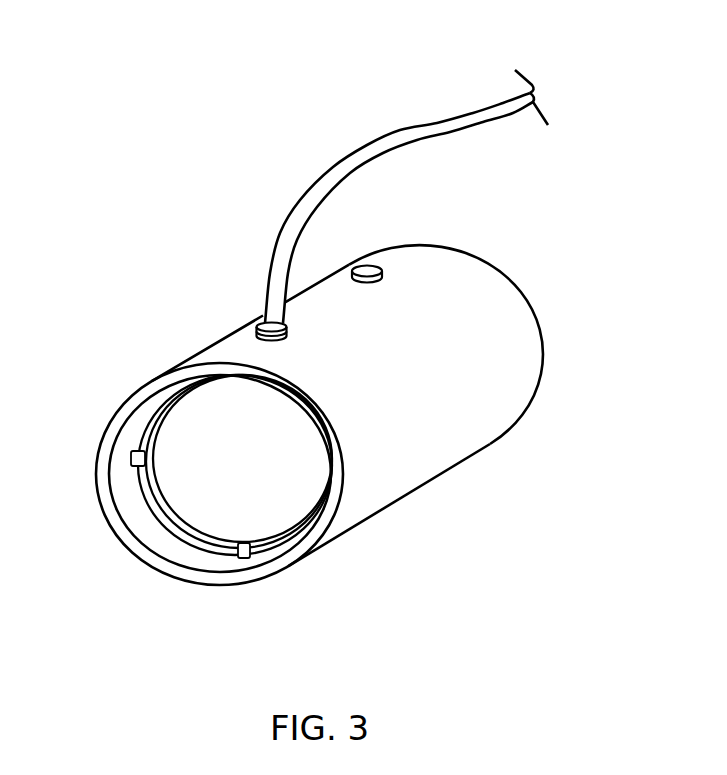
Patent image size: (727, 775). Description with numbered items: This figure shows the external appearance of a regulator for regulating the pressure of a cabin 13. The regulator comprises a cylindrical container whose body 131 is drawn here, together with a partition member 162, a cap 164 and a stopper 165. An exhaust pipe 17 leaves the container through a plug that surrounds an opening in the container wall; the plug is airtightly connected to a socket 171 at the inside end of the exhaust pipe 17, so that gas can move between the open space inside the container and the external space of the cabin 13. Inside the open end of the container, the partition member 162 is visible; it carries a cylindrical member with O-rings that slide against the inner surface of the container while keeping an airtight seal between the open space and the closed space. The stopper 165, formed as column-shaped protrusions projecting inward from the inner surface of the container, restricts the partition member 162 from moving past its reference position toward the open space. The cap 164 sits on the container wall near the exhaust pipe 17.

The cabin 13 is at (170, 313).
The exhaust pipe 17 is at (338, 164).
The housing body 131 is at (423, 465).
The partition member 162 is at (165, 422).
The cap 164 is at (384, 272).
The stopper 165 is at (243, 560).
The socket 171 is at (290, 330).